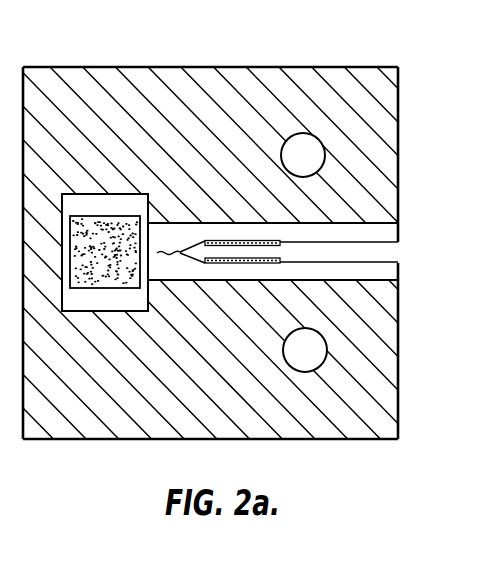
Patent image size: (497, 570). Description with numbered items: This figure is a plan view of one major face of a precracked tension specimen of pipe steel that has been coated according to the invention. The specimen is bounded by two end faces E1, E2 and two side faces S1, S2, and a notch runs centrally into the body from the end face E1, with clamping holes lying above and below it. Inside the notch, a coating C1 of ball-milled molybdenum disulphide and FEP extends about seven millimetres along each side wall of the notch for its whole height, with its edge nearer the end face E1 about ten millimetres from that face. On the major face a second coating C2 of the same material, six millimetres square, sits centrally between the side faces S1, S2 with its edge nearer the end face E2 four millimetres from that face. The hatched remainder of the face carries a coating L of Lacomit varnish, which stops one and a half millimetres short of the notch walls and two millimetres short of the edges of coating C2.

The coating C2 is at (107, 216).
The coating of Lacomit varnish L is at (205, 83).
The coating C1 is at (226, 448).
The side face S2 is at (362, 67).
The side face S1 is at (348, 439).
The end face E1 is at (398, 350).
The end face E2 is at (23, 405).